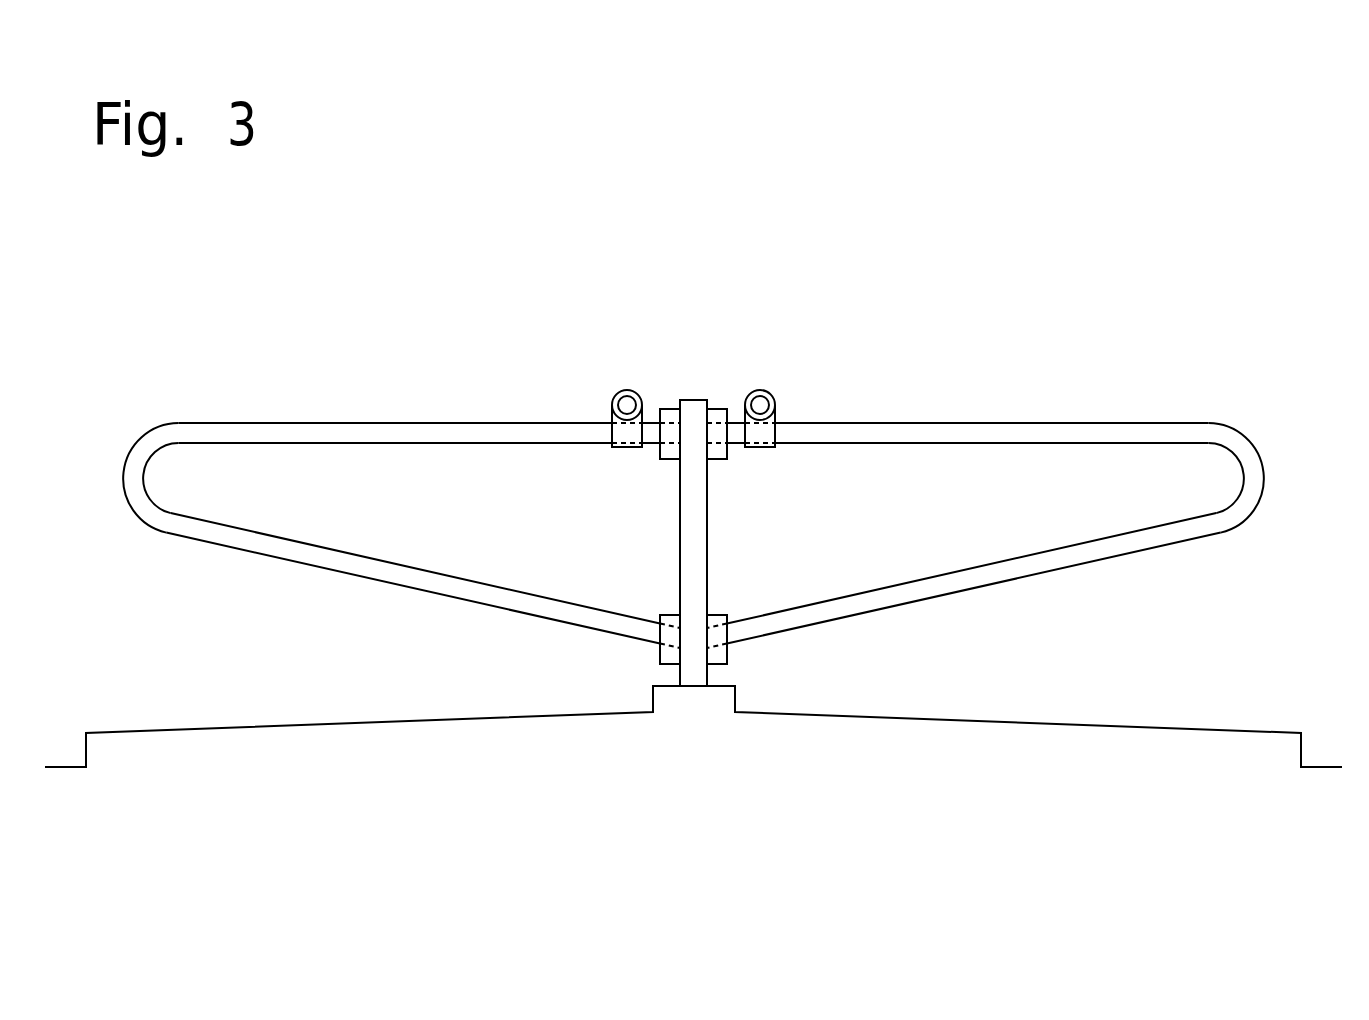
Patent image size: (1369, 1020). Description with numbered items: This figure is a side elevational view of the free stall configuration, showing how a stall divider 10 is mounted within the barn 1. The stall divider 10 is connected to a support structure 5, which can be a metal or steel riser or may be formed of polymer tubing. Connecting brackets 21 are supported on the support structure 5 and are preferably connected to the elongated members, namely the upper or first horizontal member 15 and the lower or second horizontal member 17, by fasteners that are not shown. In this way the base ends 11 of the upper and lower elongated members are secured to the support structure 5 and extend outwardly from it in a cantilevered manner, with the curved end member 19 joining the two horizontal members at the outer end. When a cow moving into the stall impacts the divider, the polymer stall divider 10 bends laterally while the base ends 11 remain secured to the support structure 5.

The barn 1 is at (1047, 722).
The support structure 5 is at (692, 524).
The stall divider 10 is at (205, 315).
The base end 11 is at (647, 423).
The upper or first horizontal member 15 is at (352, 423).
The lower or second horizontal member 17 is at (465, 580).
The curved end member 19 is at (148, 479).
The connecting bracket 21 is at (712, 410).